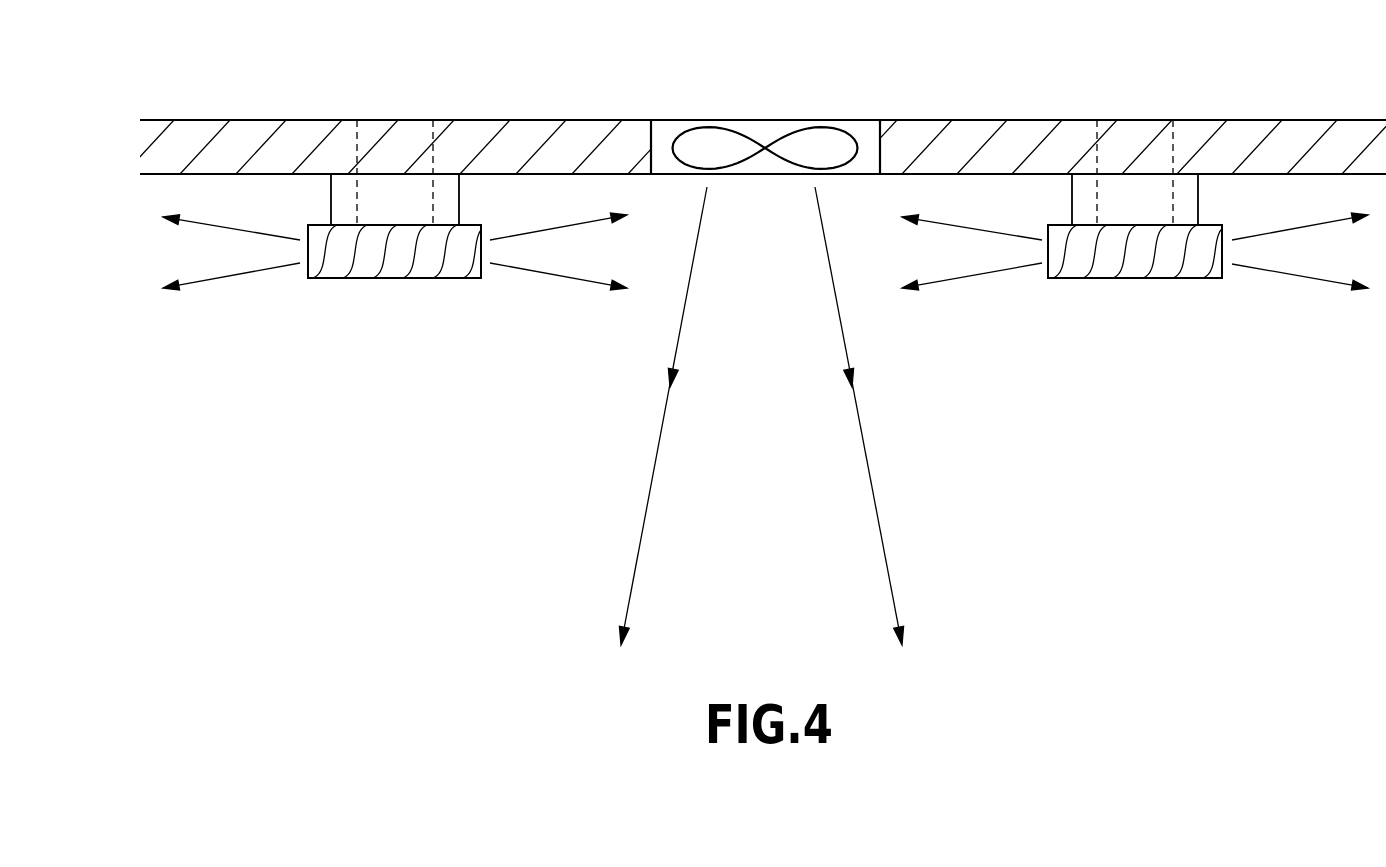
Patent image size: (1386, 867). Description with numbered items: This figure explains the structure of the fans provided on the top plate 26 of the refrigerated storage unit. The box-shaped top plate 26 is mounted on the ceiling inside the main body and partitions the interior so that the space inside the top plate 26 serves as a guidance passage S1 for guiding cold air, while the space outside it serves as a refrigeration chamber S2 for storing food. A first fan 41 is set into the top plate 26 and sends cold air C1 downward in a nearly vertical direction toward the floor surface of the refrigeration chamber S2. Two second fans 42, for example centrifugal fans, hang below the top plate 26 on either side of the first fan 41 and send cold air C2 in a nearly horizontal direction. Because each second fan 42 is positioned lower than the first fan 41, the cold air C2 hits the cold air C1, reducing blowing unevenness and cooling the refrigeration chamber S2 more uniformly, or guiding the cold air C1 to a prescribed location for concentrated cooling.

The top plate 26 is at (565, 140).
The first fan 41 is at (765, 130).
The second fan 42 is at (385, 278).
The cold air C1 is at (643, 521).
The cold air C2 is at (538, 273).
The guidance passage S1 is at (1040, 87).
The refrigeration chamber S2 is at (1041, 457).